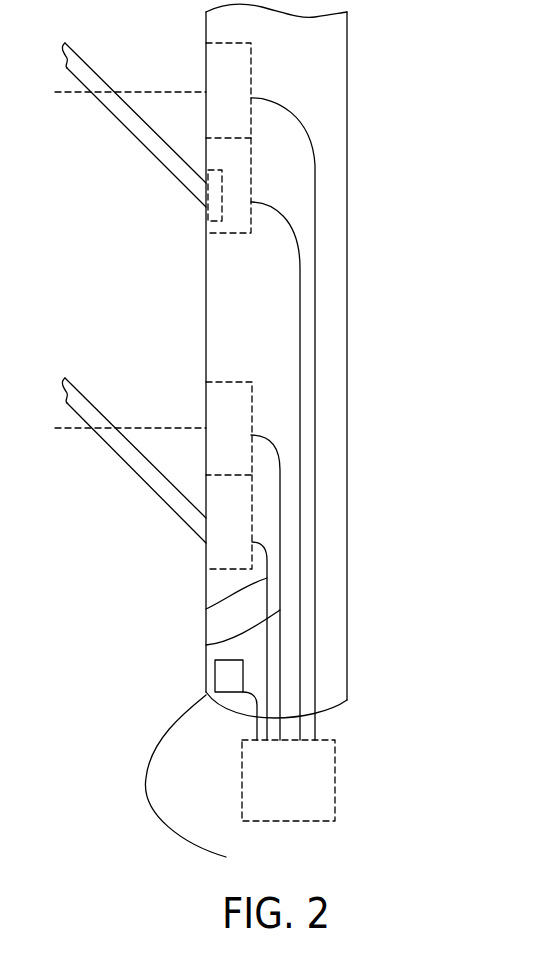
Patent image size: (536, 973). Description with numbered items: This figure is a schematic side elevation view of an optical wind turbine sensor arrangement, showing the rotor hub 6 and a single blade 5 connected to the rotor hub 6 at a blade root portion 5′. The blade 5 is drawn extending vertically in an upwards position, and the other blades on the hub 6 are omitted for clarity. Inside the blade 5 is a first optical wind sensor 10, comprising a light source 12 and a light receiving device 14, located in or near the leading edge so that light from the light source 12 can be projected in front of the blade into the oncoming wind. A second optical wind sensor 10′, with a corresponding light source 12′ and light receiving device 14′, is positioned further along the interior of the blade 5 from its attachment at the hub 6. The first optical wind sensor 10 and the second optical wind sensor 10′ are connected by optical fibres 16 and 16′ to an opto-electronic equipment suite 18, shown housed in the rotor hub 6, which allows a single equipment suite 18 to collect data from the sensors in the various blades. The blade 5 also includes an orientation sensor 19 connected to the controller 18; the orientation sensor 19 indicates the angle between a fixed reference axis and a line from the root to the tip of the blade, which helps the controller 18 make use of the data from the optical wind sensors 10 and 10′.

The blade 5 is at (347, 121).
The blade root portion 5′ is at (371, 688).
The first optical wind sensor 10 is at (372, 468).
The second optical wind sensor 10′ is at (372, 203).
The light receiving device 14 is at (206, 392).
The light receiving device 14′ is at (165, 59).
The light source 12 is at (208, 556).
The light source 12′ is at (210, 216).
The optical fibre 16 is at (206, 609).
The optical fibre 16′ is at (300, 550).
The opto-electronic equipment suite 18 is at (337, 800).
The orientation sensor 19 is at (215, 690).
The rotor hub 6 is at (146, 780).